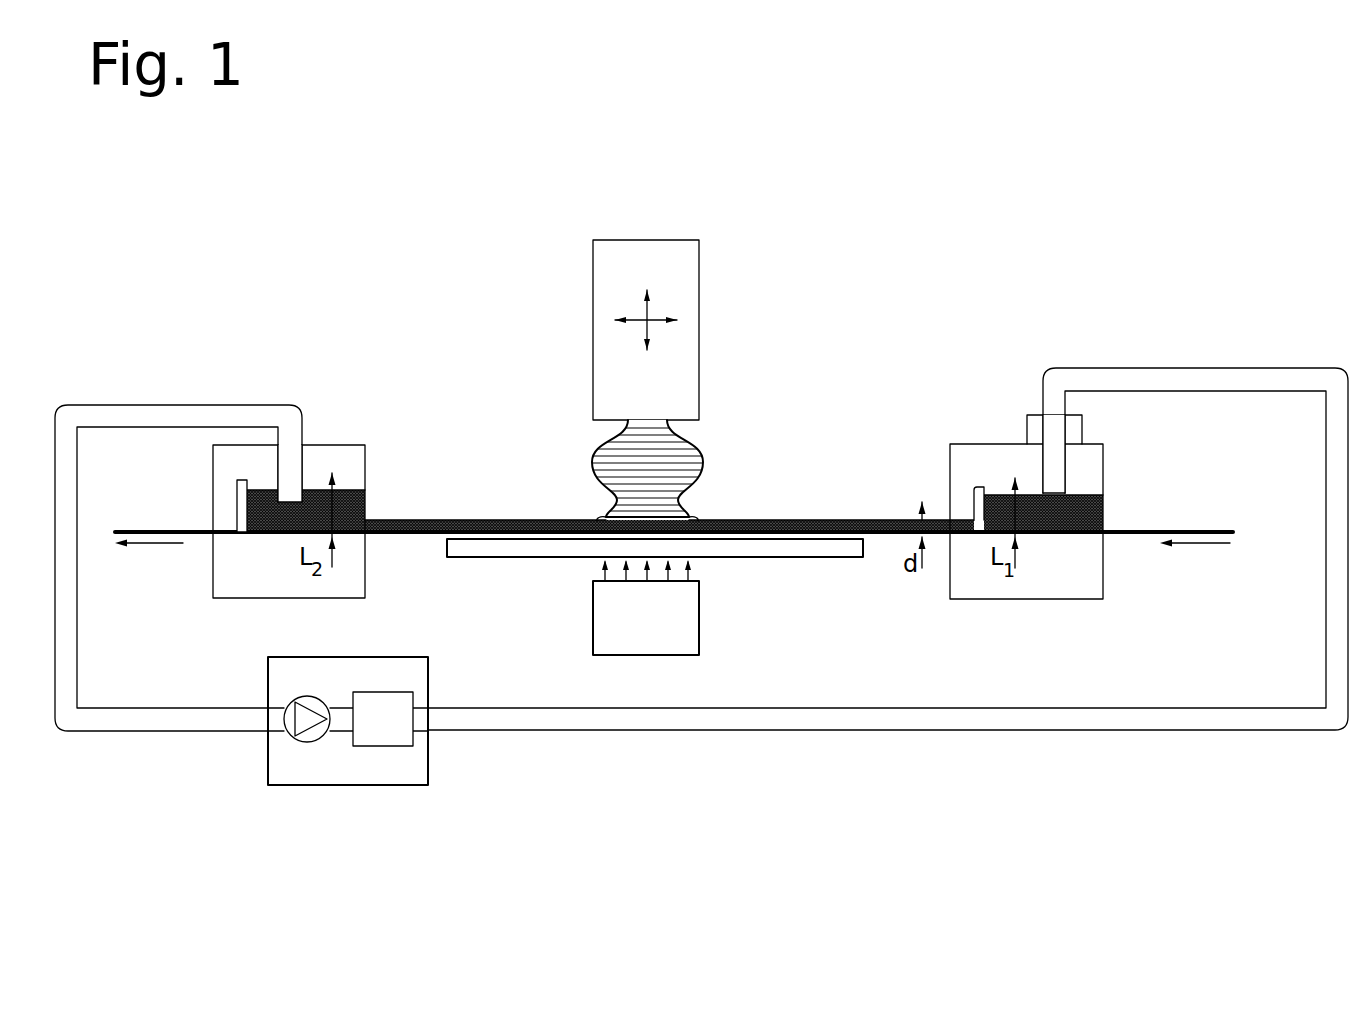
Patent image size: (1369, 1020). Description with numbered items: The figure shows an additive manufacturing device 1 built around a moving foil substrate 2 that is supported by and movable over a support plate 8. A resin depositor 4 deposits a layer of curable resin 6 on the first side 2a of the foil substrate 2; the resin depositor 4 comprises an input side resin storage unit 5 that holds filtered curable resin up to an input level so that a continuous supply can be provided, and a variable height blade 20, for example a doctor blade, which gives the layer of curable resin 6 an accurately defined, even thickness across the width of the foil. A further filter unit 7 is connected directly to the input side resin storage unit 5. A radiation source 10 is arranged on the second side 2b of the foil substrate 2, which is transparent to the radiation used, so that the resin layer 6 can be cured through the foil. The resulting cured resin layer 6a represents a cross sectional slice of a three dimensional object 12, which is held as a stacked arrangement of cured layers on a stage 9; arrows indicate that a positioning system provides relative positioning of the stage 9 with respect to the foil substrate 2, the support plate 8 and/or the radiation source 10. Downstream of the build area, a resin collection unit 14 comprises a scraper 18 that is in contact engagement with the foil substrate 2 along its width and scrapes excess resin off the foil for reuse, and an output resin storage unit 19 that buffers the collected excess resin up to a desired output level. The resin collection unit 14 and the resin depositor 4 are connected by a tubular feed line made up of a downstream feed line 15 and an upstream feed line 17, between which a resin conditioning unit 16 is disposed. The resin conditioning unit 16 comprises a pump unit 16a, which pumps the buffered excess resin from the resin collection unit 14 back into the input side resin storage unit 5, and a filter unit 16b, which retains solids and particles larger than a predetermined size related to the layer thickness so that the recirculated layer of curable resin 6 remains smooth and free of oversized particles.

The additive manufacturing device 1 is at (940, 238).
The foil substrate 2 is at (1148, 530).
The first side of the foil substrate 2a is at (770, 528).
The second side of the foil substrate 2b is at (893, 535).
The resin depositor 4 is at (949, 460).
The input side resin storage unit 5 is at (1002, 472).
The layer of curable resin 6 is at (840, 527).
The cured resin layer 6a is at (605, 520).
The further filter unit 7 is at (1078, 424).
The support plate 8 is at (815, 545).
The stage 9 is at (651, 255).
The radiation source 10 is at (698, 648).
The three dimensional object 12 is at (604, 446).
The resin collection unit 14 is at (364, 444).
The downstream feed line 15 is at (189, 412).
The resin conditioning unit 16 is at (395, 746).
The pump unit 16a is at (300, 740).
The filter unit 16b is at (403, 737).
The upstream feed line 17 is at (1192, 378).
The scraper 18 is at (236, 490).
The output resin storage unit 19 is at (318, 468).
The variable height blade 20 is at (975, 487).